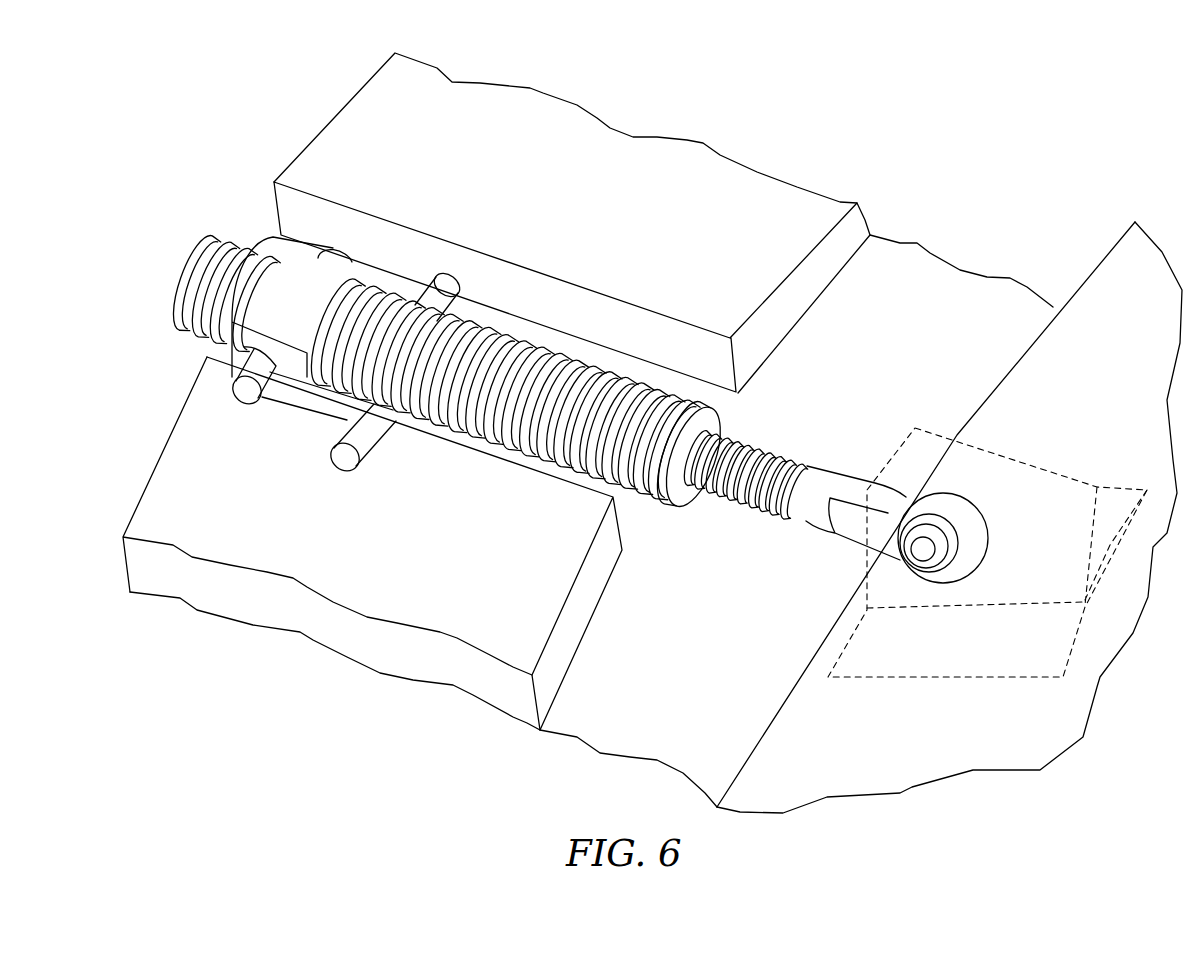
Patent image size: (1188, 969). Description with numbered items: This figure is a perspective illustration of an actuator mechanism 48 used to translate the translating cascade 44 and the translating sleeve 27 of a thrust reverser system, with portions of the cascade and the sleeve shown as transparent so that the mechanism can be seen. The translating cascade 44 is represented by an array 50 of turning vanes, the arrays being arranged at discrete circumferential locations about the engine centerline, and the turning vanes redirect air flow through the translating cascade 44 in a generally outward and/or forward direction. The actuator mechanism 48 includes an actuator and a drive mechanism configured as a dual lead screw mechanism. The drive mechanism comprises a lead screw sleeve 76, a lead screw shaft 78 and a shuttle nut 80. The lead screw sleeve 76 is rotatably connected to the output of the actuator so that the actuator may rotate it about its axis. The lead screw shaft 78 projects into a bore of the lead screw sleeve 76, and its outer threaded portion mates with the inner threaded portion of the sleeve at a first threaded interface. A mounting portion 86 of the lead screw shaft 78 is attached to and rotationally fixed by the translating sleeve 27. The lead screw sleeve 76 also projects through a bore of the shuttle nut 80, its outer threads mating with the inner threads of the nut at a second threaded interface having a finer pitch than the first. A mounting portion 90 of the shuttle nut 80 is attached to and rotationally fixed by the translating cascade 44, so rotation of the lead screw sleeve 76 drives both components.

The translating sleeve 27 is at (1135, 426).
The translating cascade 44 is at (588, 430).
The actuator mechanism 48 is at (575, 361).
The array 50 is at (571, 198).
The lead screw sleeve 76 is at (517, 395).
The lead screw shaft 78 is at (744, 474).
The shuttle nut 80 is at (360, 266).
The mounting portion 86 is at (866, 573).
The mounting portion 90 is at (418, 280).